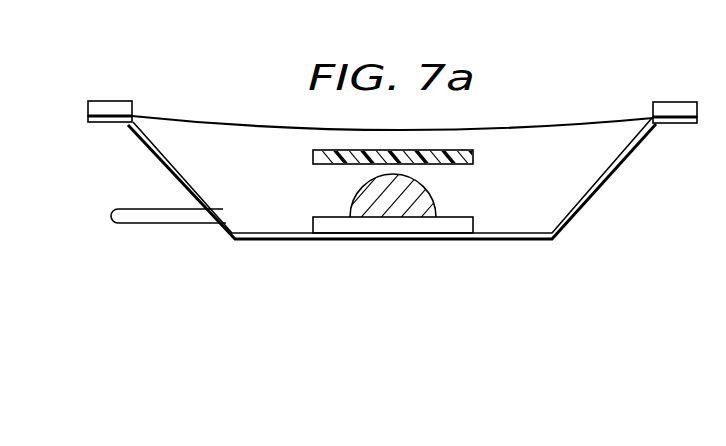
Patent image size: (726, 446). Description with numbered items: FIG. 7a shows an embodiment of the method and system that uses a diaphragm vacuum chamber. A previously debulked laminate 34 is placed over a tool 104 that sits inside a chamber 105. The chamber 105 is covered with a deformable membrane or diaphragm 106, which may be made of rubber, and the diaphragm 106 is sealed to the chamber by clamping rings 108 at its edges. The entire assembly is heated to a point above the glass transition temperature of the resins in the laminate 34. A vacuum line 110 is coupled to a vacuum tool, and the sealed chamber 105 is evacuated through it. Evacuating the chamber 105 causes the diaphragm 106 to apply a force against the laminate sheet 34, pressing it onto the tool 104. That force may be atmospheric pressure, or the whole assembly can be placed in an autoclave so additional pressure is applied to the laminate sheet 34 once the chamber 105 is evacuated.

The previously debulked laminate 34 is at (473, 157).
The tool 104 is at (437, 196).
The chamber 105 is at (600, 183).
The deformable membrane or diaphragm 106 is at (195, 118).
The clamping rings 108 is at (112, 100).
The vacuum line 110 is at (138, 208).